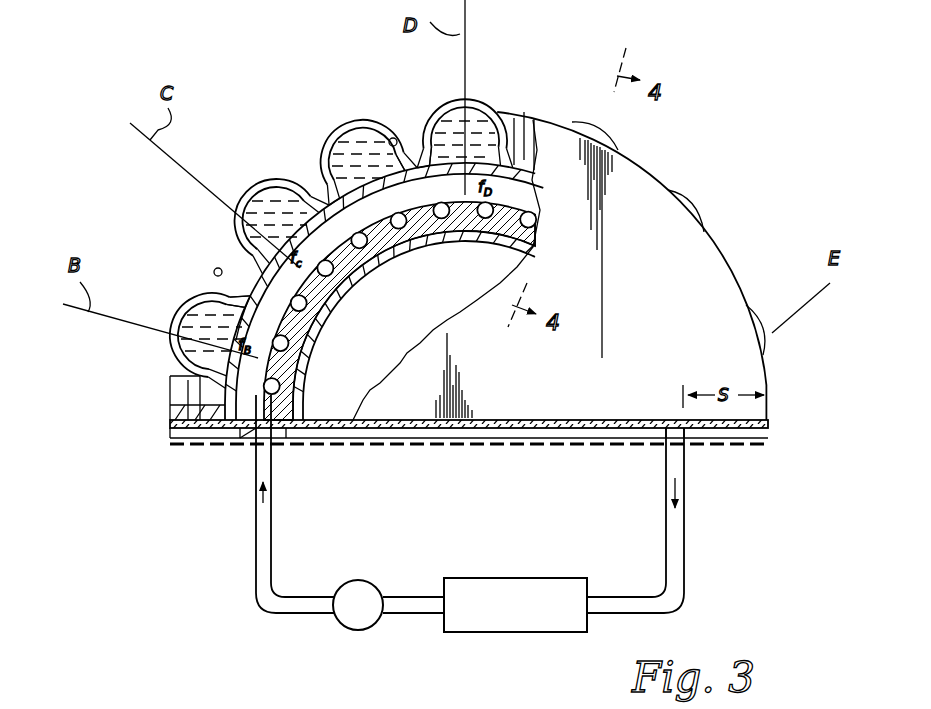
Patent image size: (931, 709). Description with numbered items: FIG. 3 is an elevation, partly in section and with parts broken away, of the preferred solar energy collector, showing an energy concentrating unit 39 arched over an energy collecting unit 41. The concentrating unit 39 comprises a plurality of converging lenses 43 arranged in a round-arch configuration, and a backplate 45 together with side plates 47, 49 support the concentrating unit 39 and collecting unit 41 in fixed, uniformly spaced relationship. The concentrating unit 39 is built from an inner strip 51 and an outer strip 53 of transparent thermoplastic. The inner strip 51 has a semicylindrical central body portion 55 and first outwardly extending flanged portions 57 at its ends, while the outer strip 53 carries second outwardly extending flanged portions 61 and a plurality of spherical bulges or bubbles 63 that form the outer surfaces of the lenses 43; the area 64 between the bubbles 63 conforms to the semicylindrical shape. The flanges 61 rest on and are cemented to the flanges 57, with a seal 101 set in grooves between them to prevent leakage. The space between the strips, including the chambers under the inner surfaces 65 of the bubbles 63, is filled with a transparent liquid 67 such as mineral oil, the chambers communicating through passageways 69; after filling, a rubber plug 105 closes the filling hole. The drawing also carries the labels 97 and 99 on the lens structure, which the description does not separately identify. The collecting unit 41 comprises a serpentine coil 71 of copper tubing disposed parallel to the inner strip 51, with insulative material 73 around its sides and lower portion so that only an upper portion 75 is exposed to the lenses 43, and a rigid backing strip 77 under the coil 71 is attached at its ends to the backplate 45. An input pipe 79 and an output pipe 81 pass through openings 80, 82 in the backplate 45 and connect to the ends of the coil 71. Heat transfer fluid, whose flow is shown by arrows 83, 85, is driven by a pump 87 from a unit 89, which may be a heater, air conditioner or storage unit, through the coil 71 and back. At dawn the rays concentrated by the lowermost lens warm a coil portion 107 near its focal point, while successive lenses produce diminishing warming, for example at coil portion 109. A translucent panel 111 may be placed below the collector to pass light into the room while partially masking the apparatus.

The energy concentrating unit 39 is at (479, 96).
The energy collecting unit 41 is at (415, 188).
The converging lenses 43 is at (300, 152).
The backplate 45 is at (337, 427).
The side plate 47 is at (650, 302).
The side plate 49 is at (228, 292).
The inner strip 51 is at (488, 157).
The outer strip 53 is at (527, 122).
The central body portion 55 is at (170, 358).
The first outwardly extending flanged portions 57 is at (172, 418).
The second outwardly extending flanged portions 61 is at (170, 403).
The spherical bulges or bubbles 63 is at (172, 345).
The area of main body section 64 is at (207, 270).
The inner surfaces of bubbles 65 is at (240, 302).
The transparent liquid 67 is at (322, 150).
The passageways 69 is at (390, 205).
The serpentine coil 71 is at (280, 387).
The insulative material 73 is at (478, 232).
The upper portion of the tubing 75 is at (383, 250).
The rigid backing strip 77 is at (407, 257).
The input pipe 79 is at (256, 472).
The opening 80 is at (240, 440).
The output pipe 81 is at (665, 533).
The opening 82 is at (663, 428).
The arrow indicating flow of heat transfer fluid 83 is at (270, 497).
The arrow indicating flow of heat transfer fluid 85 is at (680, 490).
The pump 87 is at (360, 580).
The unit 89 is at (503, 578).
The wall 97 is at (420, 112).
The vent openings 99 is at (390, 138).
The seal 101 is at (183, 430).
The rubber plug 105 is at (185, 448).
The portion of the coil 107 is at (280, 365).
The coil portion 109 is at (333, 172).
The translucent, non-transparent panel 111 is at (715, 447).